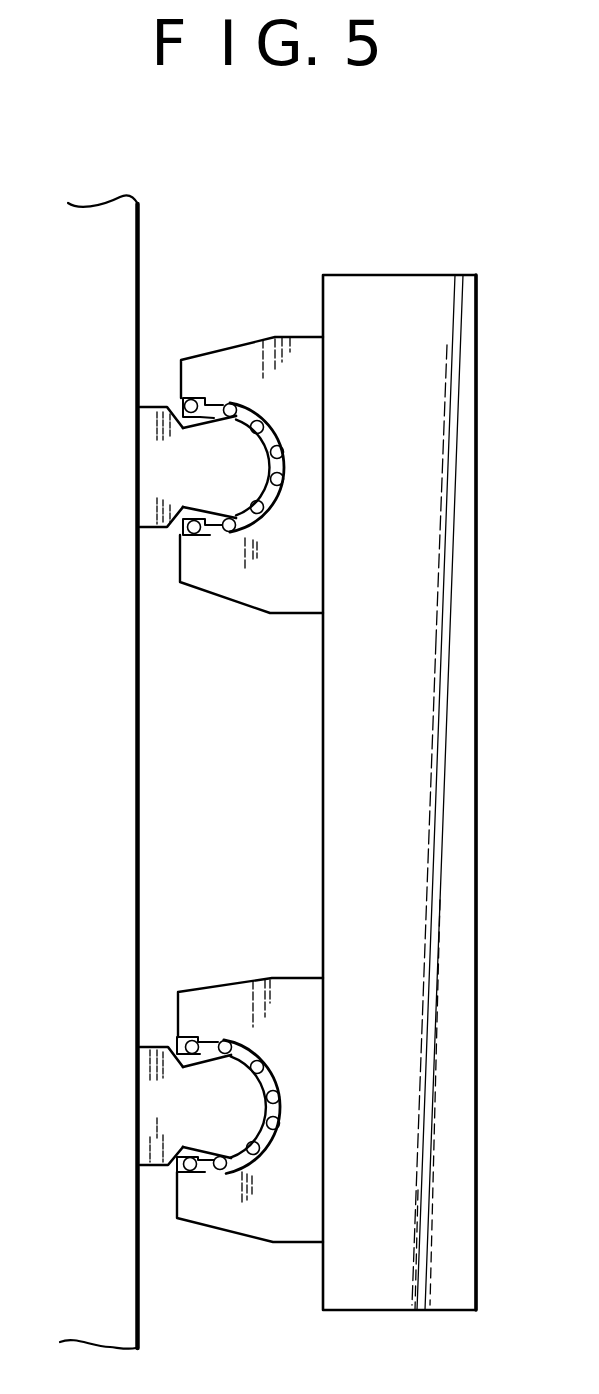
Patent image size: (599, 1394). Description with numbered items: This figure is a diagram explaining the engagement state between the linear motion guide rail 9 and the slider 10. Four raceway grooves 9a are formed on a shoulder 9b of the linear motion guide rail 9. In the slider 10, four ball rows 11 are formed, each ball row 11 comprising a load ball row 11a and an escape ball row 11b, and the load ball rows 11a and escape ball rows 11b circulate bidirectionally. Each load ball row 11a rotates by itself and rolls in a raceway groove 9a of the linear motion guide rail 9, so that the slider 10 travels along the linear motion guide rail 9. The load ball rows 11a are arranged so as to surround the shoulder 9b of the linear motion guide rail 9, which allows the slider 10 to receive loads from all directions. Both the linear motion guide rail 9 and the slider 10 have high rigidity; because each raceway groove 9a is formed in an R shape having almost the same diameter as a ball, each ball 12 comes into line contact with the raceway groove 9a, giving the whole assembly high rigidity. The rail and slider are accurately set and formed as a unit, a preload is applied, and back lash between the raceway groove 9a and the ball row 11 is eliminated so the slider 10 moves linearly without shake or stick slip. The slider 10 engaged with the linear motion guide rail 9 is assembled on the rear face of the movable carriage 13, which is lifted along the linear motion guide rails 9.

The linear motion guide rail 9 is at (137, 503).
The raceway groove 9a is at (222, 529).
The shoulder 9b is at (250, 475).
The slider 10 is at (291, 350).
The ball row 11 is at (213, 788).
The load ball row 11a is at (235, 403).
The escape ball row 11b is at (194, 399).
The ball 12 is at (264, 424).
The movable carriage 13 is at (452, 914).